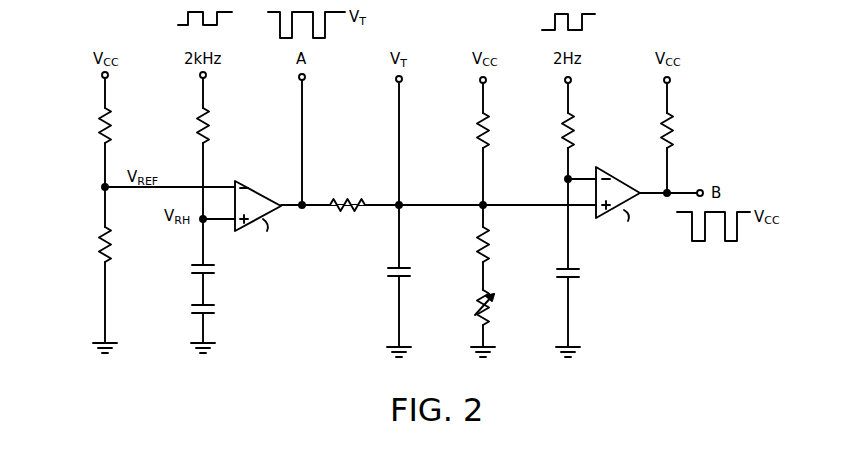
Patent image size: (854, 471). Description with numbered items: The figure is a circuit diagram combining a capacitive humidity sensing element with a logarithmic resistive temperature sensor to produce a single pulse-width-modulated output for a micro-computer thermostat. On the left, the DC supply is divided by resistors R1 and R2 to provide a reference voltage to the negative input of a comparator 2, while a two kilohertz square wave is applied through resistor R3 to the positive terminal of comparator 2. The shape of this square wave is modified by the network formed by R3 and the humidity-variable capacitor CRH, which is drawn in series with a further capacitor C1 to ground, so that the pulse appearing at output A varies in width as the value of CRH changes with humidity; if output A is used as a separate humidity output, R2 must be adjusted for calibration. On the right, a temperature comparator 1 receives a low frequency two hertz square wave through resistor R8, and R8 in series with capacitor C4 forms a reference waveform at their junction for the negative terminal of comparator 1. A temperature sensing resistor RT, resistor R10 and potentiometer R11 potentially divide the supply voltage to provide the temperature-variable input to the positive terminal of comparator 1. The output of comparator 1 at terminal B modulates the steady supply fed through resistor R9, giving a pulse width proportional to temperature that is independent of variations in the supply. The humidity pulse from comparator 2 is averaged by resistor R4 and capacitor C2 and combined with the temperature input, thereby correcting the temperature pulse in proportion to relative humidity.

The temperature comparator 1 is at (615, 174).
The comparator 2 is at (246, 183).
The resistor R1 is at (90, 125).
The resistor R2 is at (90, 244).
The resistor R3 is at (189, 125).
The resistor R4 is at (347, 195).
The resistor R8 is at (580, 130).
The resistor R9 is at (679, 130).
The resistor R10 is at (466, 244).
The potentiometer R11 is at (468, 307).
The temperature sensing resistor RT is at (468, 130).
The capacitor C1 is at (188, 271).
The capacitive humidity sensing element CRH is at (185, 314).
The capacitor C2 is at (383, 275).
The capacitor C4 is at (581, 275).